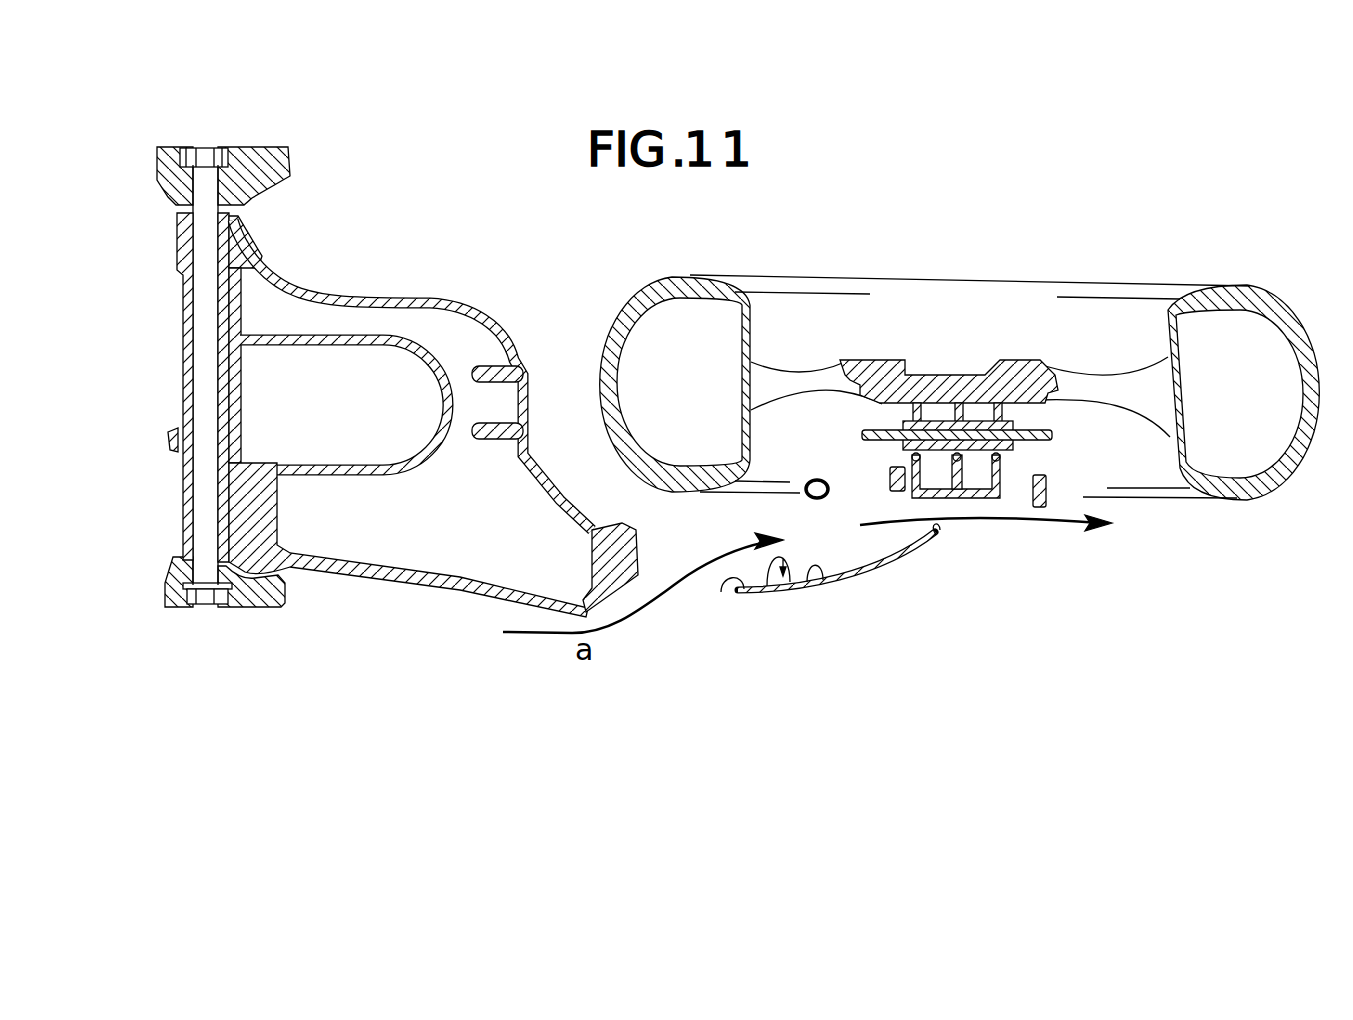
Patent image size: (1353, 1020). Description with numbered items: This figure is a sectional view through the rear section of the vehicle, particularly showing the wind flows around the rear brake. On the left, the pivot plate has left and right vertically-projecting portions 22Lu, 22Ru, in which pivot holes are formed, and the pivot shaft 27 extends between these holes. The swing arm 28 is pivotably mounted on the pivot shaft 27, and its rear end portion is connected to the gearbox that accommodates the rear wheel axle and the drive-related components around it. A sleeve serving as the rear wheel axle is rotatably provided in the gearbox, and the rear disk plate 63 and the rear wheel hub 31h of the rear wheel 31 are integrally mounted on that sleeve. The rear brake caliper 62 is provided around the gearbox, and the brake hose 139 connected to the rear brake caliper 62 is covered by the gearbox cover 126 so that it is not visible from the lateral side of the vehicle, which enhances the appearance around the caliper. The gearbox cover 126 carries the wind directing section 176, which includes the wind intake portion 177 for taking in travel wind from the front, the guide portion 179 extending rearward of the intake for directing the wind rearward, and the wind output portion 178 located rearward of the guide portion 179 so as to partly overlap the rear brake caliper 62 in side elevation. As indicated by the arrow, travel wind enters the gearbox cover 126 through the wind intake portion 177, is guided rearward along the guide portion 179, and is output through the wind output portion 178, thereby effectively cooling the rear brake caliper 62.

The right vertically-projecting portion 22Ru is at (168, 147).
The left vertically-projecting portion 22Lu is at (170, 607).
The pivot shaft 27 is at (207, 345).
The swing arm 28 is at (362, 585).
The rear wheel 31 is at (1160, 286).
The rear wheel hub 31h is at (1028, 357).
The rear disk plate 63 is at (1058, 437).
The rear brake caliper 62 is at (1002, 495).
The brake hose 139 is at (828, 497).
The gearbox cover 126 is at (853, 582).
The wind intake portion 177 is at (721, 592).
The wind directing section 176 is at (767, 586).
The guide portion 179 is at (807, 582).
The wind output portion 178 is at (941, 535).